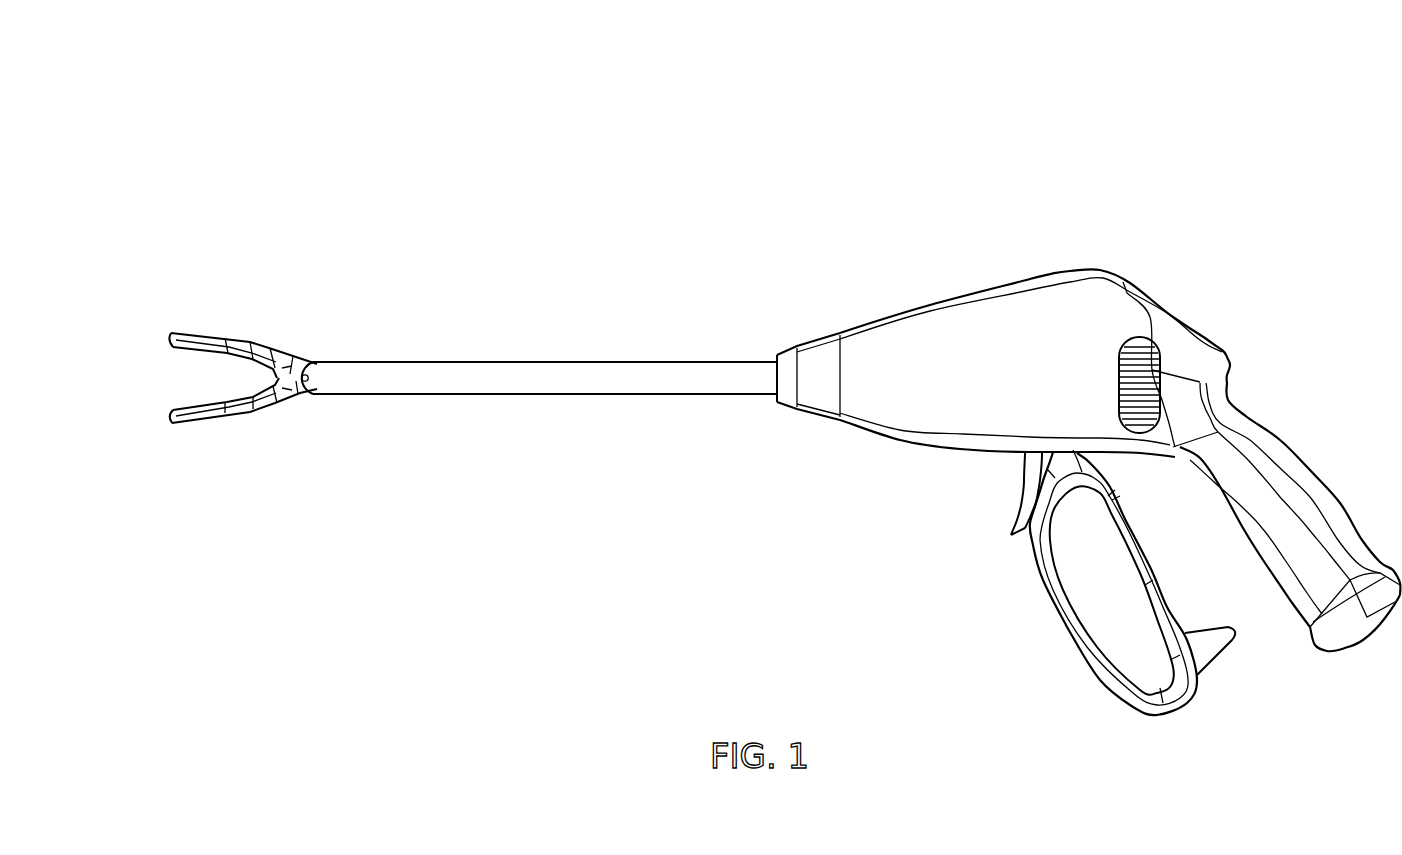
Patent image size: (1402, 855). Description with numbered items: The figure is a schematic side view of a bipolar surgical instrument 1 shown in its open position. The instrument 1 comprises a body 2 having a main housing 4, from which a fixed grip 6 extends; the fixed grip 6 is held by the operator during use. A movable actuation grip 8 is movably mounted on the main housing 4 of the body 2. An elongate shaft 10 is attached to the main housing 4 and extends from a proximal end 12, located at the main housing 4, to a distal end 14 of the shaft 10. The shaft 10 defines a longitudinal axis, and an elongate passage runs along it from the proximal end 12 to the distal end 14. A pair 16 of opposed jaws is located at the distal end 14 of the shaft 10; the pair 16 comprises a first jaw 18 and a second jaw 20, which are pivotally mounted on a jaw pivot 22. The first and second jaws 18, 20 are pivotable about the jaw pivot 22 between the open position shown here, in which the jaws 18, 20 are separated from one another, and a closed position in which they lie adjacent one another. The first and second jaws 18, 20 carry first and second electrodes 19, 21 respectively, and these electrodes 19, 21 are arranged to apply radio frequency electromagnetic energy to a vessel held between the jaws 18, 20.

The bipolar surgical instrument 1 is at (156, 156).
The body 2 is at (1107, 273).
The main housing 4 is at (897, 382).
The fixed grip 6 is at (1318, 490).
The movable actuation grip 8 is at (1113, 683).
The elongate shaft 10 is at (500, 361).
The proximal end 12 is at (781, 352).
The distal end 14 is at (312, 399).
The pair of opposed jaws 16 is at (157, 307).
The first jaw 18 is at (178, 333).
The first electrode 19 is at (224, 354).
The second jaw 20 is at (176, 424).
The second electrode 21 is at (216, 402).
The jaw pivot 22 is at (311, 372).